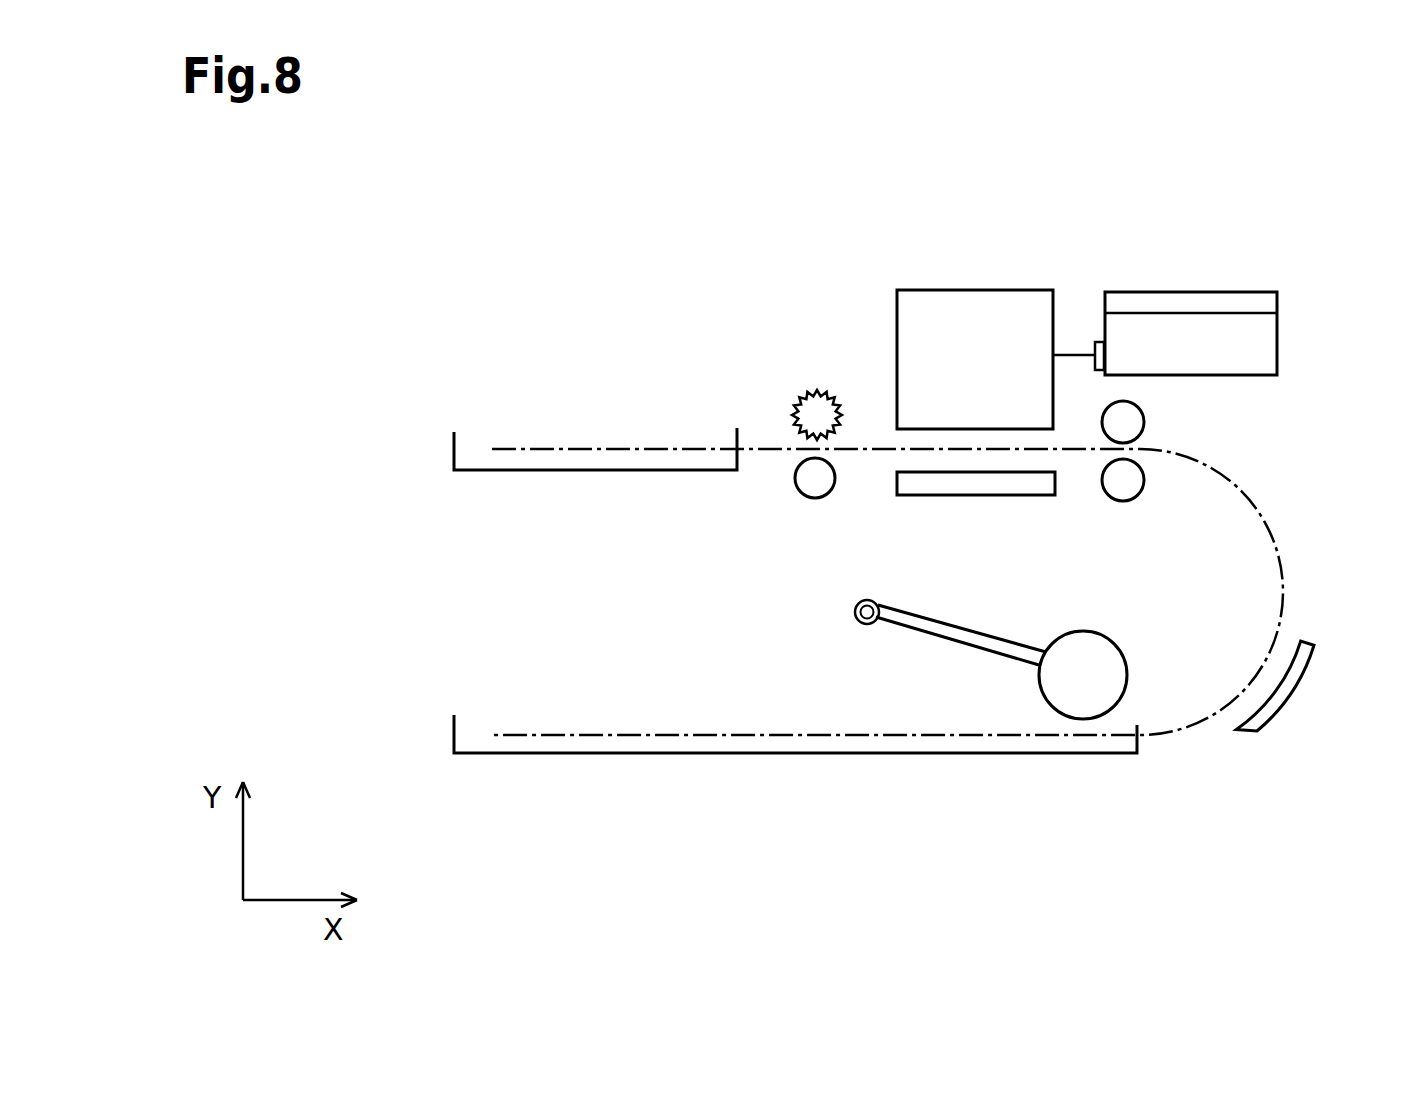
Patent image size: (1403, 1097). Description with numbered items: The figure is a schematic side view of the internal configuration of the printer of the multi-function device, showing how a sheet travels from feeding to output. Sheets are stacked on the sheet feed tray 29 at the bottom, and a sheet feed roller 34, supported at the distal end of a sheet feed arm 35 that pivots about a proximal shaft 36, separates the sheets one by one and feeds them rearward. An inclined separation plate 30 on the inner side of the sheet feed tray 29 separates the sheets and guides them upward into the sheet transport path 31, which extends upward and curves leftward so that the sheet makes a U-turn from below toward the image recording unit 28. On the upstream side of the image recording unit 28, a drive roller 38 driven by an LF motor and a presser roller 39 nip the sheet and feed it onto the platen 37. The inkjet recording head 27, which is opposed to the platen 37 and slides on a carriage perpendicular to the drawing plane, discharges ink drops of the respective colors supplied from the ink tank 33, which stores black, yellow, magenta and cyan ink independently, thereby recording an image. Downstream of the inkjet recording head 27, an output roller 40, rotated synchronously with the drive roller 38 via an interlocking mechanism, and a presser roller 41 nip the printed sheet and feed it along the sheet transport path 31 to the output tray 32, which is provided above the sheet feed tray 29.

The inkjet recording head 27 is at (935, 290).
The image recording unit 28 is at (1065, 248).
The sheet feed tray 29 is at (528, 754).
The inclined separation plate 30 is at (1297, 690).
The sheet transport path 31 is at (1257, 510).
The output tray 32 is at (537, 471).
The ink tank 33 is at (1245, 291).
The sheet feed roller 34 is at (1117, 637).
The sheet feed arm 35 is at (950, 641).
The proximal shaft 36 is at (858, 619).
The platen 37 is at (995, 495).
The drive roller 38 is at (1123, 501).
The presser roller 39 is at (1144, 412).
The output roller 40 is at (812, 498).
The presser roller 41 is at (792, 417).